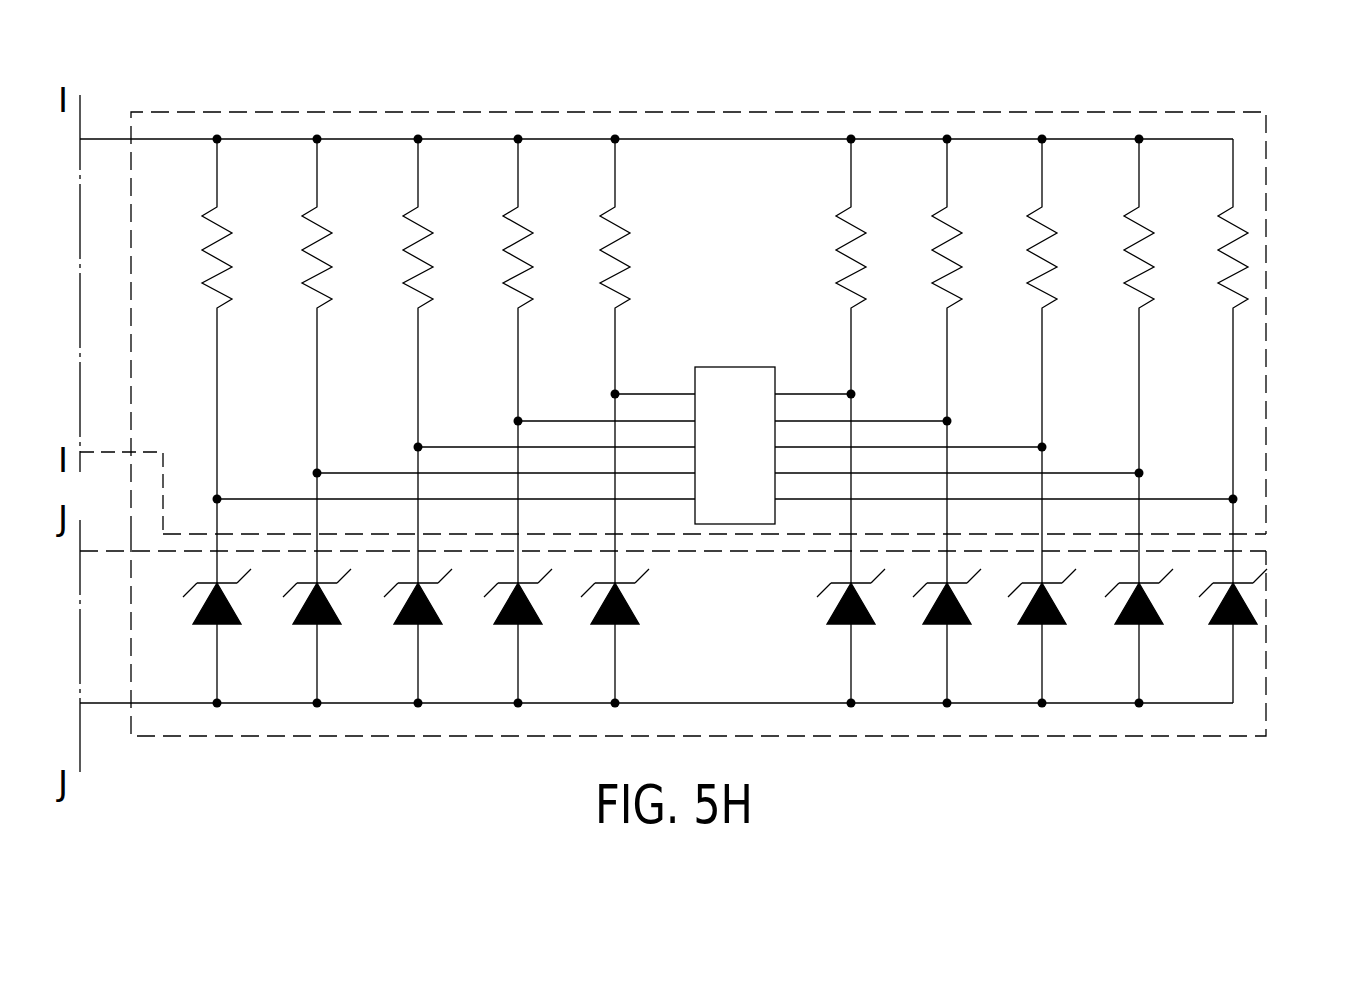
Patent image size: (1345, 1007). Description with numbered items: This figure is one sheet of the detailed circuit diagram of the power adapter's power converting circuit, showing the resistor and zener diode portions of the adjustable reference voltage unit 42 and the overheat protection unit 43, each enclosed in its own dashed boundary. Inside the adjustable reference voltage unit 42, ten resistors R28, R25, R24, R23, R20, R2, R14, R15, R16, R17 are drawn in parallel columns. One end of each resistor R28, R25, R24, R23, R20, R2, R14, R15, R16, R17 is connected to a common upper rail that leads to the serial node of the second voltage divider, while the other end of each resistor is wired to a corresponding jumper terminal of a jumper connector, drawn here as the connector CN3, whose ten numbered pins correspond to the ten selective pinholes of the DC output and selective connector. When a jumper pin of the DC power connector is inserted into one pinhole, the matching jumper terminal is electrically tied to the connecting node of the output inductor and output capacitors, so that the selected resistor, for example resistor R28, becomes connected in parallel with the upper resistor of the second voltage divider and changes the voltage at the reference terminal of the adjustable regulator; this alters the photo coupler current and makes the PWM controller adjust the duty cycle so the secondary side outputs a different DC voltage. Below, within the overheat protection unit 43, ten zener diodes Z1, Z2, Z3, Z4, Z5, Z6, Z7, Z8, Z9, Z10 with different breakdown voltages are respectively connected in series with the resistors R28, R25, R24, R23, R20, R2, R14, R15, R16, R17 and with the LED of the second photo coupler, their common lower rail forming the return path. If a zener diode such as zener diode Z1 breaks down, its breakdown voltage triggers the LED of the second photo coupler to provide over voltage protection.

The adjustable reference voltage unit 42 is at (698, 110).
The overheat protection unit 43 is at (1250, 697).
The connector CN3 is at (725, 427).
The resistor R28 is at (188, 361).
The resistor R25 is at (285, 361).
The resistor R24 is at (388, 361).
The resistor R23 is at (488, 361).
The resistor R20 is at (586, 361).
The resistor R2 is at (822, 361).
The resistor R14 is at (919, 361).
The resistor R15 is at (1014, 361).
The resistor R16 is at (1110, 361).
The resistor R17 is at (1205, 361).
The zener diode Z1 is at (199, 627).
The zener diode Z2 is at (296, 627).
The zener diode Z3 is at (404, 627).
The zener diode Z4 is at (505, 627).
The zener diode Z5 is at (602, 627).
The zener diode Z6 is at (840, 627).
The zener diode Z7 is at (935, 627).
The zener diode Z8 is at (1030, 627).
The zener diode Z9 is at (1127, 627).
The zener diode Z10 is at (1222, 627).